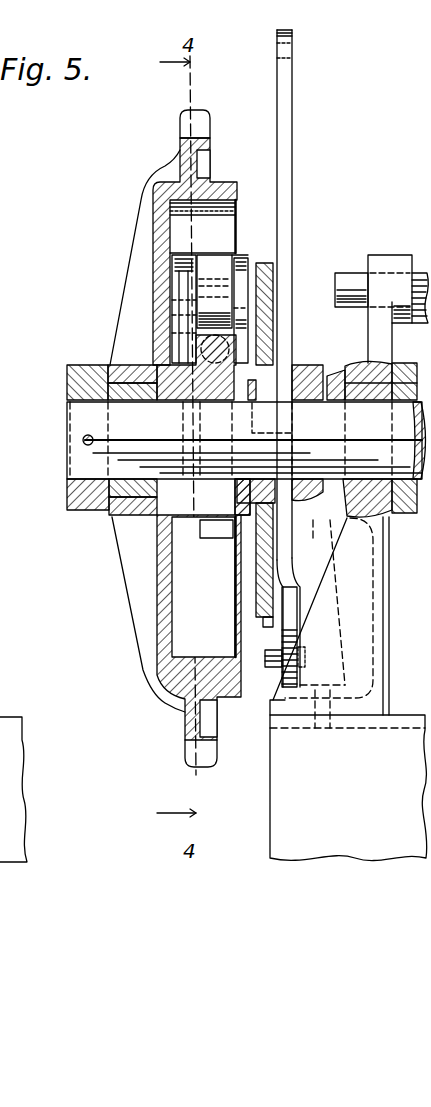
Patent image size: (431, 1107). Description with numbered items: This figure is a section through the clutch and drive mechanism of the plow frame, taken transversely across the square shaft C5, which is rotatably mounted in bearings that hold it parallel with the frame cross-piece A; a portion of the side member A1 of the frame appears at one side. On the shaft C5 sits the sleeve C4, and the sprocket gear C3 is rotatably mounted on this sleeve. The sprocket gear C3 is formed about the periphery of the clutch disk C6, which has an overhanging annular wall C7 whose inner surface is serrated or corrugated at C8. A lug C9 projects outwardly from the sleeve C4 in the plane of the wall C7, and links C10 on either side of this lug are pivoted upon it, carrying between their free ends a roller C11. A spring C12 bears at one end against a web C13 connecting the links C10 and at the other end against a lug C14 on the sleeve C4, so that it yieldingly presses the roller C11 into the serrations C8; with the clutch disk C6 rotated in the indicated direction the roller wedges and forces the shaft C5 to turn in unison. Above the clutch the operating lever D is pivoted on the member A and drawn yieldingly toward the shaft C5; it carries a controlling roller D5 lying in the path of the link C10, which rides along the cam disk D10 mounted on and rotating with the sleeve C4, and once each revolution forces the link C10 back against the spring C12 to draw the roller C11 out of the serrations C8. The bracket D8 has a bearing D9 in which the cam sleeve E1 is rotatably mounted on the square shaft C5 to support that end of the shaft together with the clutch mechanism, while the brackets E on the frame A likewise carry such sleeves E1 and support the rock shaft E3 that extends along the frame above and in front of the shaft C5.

The sprocket gear C3 is at (183, 128).
The overhanging annular wall C7 is at (210, 183).
The clutch disk C6 is at (163, 243).
The serrations C8 is at (180, 262).
The links C10 is at (187, 310).
The roller C11 is at (217, 272).
The cam disk D10 is at (233, 255).
The web C13 is at (247, 334).
The spring C12 is at (230, 349).
The lug C14 is at (195, 340).
The sleeve C4 is at (135, 392).
The square shaft C5 is at (77, 422).
The controlling roller D5 is at (260, 405).
The lug C9 is at (203, 530).
The operating lever D is at (285, 108).
The rock shaft E3 is at (347, 285).
The bearing D9 is at (350, 366).
The sleeve E1 is at (388, 568).
The brackets E is at (303, 608).
The bracket D8 is at (377, 643).
The cross-piece A is at (297, 805).
The side member A1 is at (18, 773).